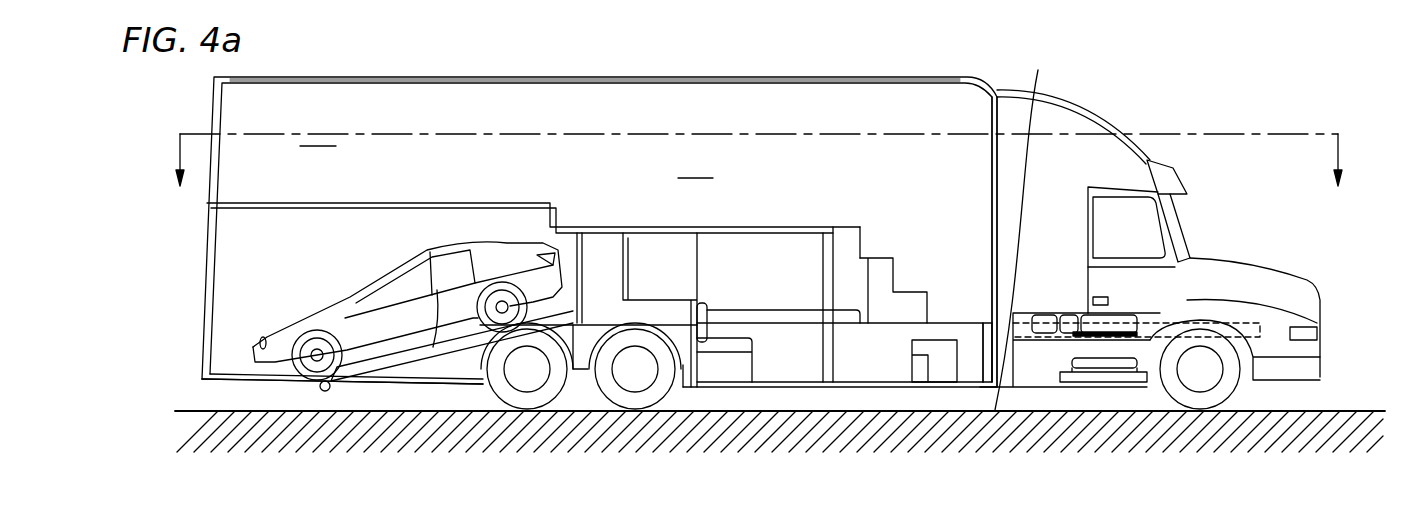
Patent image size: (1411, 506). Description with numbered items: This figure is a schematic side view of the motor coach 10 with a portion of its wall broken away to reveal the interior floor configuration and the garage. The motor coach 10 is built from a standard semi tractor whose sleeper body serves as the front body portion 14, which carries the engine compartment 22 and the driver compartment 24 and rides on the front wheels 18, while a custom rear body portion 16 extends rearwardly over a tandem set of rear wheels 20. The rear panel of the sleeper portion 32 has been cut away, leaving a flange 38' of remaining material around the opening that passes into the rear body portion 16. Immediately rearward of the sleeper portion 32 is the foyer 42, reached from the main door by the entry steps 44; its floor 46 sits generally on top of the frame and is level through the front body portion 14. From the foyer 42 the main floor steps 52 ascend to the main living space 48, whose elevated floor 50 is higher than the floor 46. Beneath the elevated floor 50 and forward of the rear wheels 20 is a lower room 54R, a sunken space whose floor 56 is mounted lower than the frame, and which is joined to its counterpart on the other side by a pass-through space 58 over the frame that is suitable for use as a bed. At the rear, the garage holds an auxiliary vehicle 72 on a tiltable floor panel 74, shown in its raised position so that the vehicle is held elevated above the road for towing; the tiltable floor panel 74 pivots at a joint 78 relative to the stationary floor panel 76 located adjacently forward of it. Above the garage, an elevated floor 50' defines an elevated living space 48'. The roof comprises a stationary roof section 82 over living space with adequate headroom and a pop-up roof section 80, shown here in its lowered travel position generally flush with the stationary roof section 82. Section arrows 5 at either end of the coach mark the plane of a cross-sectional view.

The section line 5- 5 is at (760, 169).
The motor coach 10 is at (1232, 110).
The front body portion 14 is at (1108, 105).
The rear body portion 16 is at (841, 62).
The front wheels 18 is at (1202, 407).
The rear wheels 20 is at (528, 407).
The engine compartment 22 is at (1292, 292).
The driver compartment 24 is at (1153, 235).
The sleeper portion 32 is at (1060, 122).
The flange 38' is at (961, 198).
The foyer 42 is at (931, 282).
The entry steps 44 is at (940, 368).
The floor 46 is at (970, 323).
The main living space 48 is at (695, 164).
The elevated living space 48' is at (318, 131).
The elevated floor 50 is at (736, 272).
The elevated floor 50' is at (533, 186).
The main floor steps 52 is at (885, 300).
The lower room 54R is at (795, 358).
The floor 56 is at (810, 380).
The pass-through space 58 is at (762, 283).
The auxiliary vehicle 72 is at (280, 308).
The tiltable floor panel 74 is at (262, 384).
The stationary floor panel 76 is at (452, 371).
The joint 78 is at (325, 392).
The pop-up roof section 80 is at (360, 76).
The stationary roof section 82 is at (718, 76).